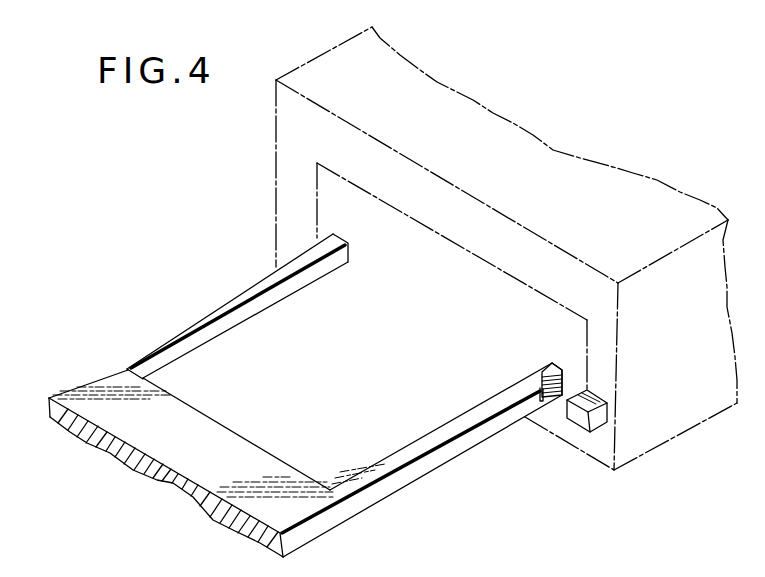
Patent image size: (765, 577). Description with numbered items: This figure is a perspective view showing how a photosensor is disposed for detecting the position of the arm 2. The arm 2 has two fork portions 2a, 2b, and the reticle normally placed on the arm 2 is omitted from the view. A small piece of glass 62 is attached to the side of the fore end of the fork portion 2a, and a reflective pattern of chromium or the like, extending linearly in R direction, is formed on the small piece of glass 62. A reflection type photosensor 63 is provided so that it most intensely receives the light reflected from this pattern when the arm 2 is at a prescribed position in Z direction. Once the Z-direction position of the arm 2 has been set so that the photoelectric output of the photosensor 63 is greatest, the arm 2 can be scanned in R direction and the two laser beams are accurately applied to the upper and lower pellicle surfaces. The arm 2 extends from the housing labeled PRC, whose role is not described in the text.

The processor housing PRC is at (585, 157).
The arm 2 is at (103, 374).
The fork portion 2a is at (412, 450).
The fork portion 2b is at (210, 313).
The small piece of glass 62 is at (540, 393).
The reflection type photosensor 63 is at (580, 421).